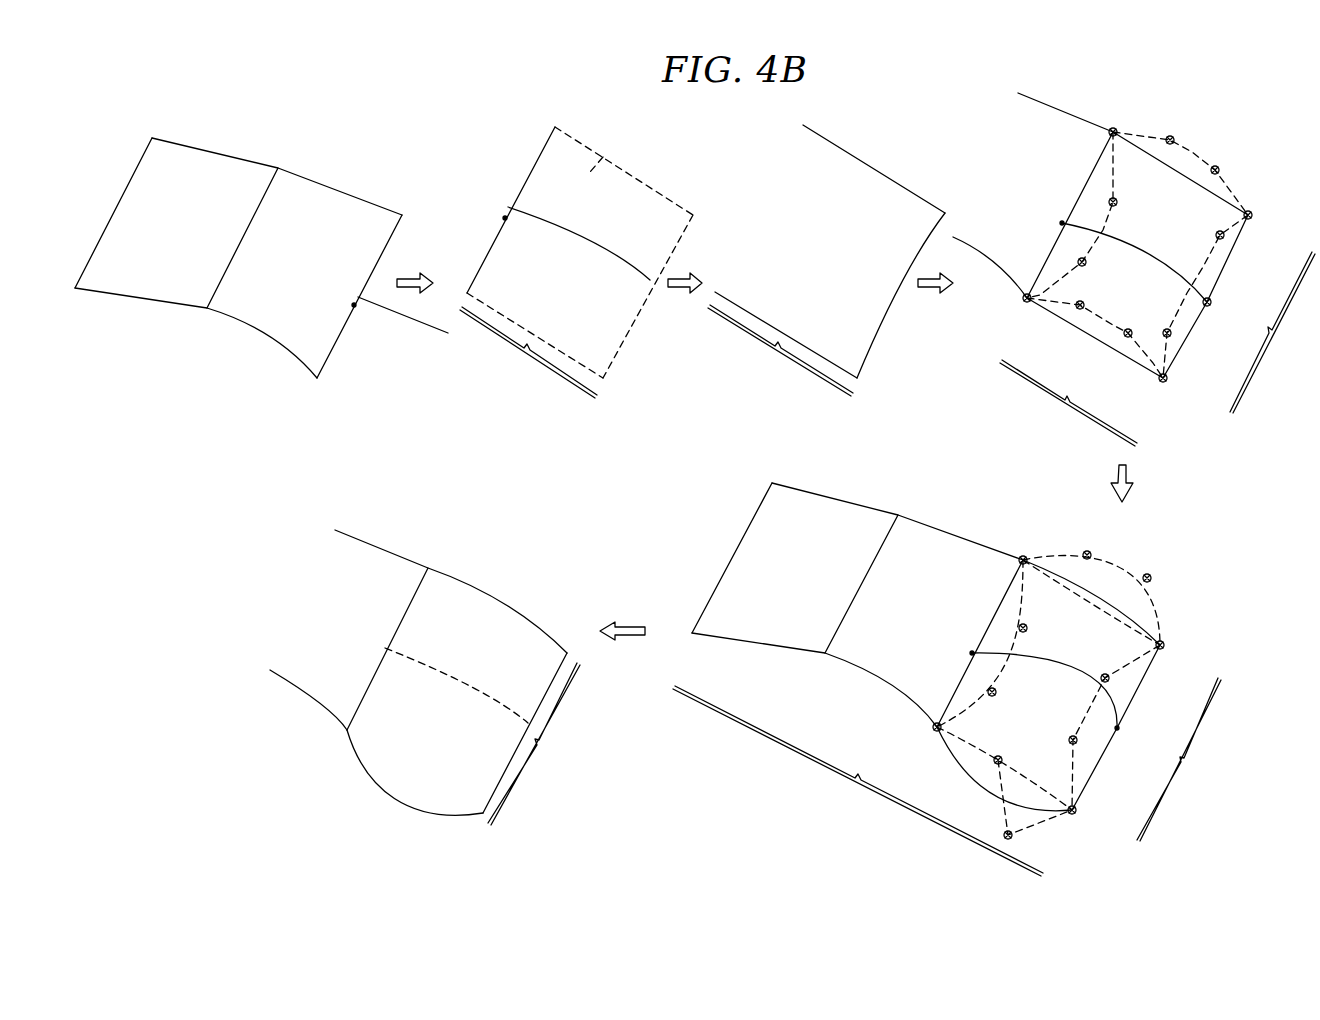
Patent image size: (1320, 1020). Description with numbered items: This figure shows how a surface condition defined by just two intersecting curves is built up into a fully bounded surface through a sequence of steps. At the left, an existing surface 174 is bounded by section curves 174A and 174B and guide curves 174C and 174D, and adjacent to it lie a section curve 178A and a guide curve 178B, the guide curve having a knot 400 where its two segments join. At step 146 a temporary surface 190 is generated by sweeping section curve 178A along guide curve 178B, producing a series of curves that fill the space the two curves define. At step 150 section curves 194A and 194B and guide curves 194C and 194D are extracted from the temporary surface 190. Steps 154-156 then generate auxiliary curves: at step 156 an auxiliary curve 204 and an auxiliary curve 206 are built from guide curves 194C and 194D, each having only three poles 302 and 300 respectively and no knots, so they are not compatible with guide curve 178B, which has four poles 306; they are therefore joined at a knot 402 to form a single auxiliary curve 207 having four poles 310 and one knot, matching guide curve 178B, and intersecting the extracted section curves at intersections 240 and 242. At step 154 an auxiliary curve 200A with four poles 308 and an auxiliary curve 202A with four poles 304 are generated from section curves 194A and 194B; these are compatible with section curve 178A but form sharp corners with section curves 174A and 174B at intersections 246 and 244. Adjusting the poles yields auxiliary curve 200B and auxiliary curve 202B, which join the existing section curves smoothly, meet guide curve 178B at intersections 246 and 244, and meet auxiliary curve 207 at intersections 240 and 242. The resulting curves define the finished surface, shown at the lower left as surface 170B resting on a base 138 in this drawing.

The surface 174 is at (313, 160).
The section curve 174A is at (132, 297).
The section curve 174B is at (197, 150).
The guide curve 174C is at (117, 200).
The guide curve 174D is at (242, 237).
The section curve 178A is at (403, 317).
The guide curve 178B is at (370, 263).
The knot 400 is at (350, 305).
The temporary surface 190 is at (665, 171).
The section curve 194A is at (533, 328).
The section curve 194B is at (845, 150).
The guide curve 194C is at (662, 263).
The guide curve 194D is at (630, 322).
The step 146 is at (528, 352).
The step 150 is at (780, 350).
The steps 154-156 is at (905, 618).
The step 154 is at (905, 618).
The step 156 is at (905, 618).
The intersection 240 is at (1093, 840).
The intersection 242 is at (1255, 218).
The intersection 244 is at (1110, 125).
The intersection 246 is at (1022, 302).
The poles 300 is at (1167, 327).
The poles 302 is at (1242, 217).
The poles 304 is at (1122, 127).
The poles 306 is at (1107, 131).
The poles 308 is at (1025, 308).
The poles 310 is at (1098, 682).
The auxiliary curve 200A is at (1083, 335).
The auxiliary curve 200B is at (958, 770).
The auxiliary curve 202A is at (1193, 185).
The auxiliary curve 202B is at (1097, 590).
The auxiliary curve 204 is at (1150, 717).
The auxiliary curve 206 is at (1180, 355).
The auxiliary curve 207 is at (1226, 546).
The knot 402 is at (1213, 300).
The formed part 170B is at (496, 570).
The base 138 is at (538, 745).